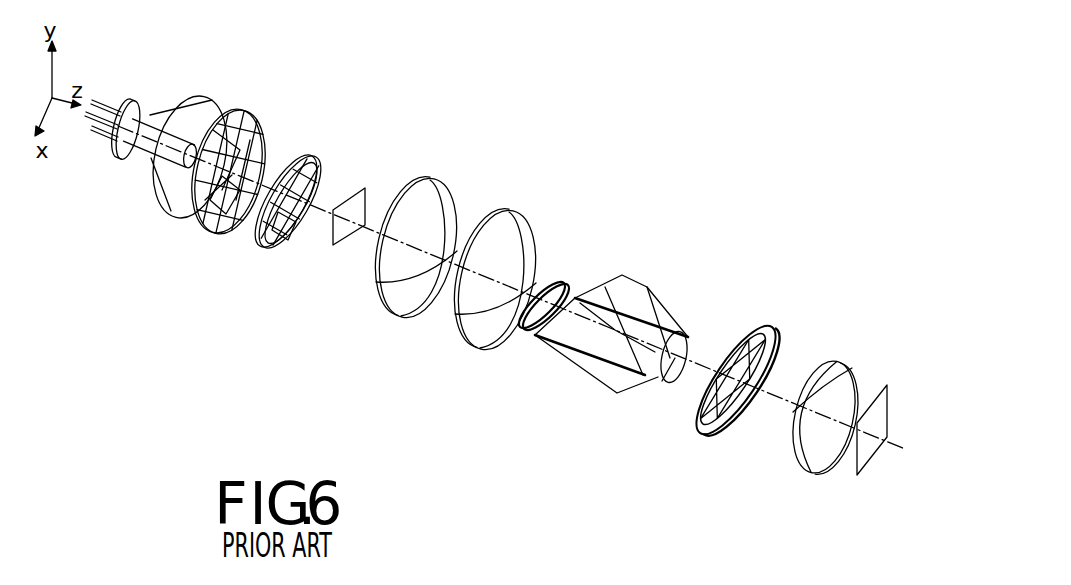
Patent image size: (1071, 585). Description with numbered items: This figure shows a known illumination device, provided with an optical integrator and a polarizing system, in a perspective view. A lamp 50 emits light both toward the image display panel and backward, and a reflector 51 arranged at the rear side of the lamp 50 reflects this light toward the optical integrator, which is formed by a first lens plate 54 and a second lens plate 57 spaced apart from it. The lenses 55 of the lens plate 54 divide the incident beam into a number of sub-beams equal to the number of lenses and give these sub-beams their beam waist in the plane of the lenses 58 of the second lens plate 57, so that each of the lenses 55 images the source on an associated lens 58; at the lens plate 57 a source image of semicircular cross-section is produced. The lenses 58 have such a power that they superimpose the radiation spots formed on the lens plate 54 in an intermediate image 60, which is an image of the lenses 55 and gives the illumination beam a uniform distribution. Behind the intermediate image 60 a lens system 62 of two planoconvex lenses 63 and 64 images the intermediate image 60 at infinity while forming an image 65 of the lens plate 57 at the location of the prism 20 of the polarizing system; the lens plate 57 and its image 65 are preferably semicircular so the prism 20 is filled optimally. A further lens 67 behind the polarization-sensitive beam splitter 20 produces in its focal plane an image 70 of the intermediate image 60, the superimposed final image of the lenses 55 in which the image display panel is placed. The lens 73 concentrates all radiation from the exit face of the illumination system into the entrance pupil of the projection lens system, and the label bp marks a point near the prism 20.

The lamp 50 is at (167, 202).
The reflector 51 is at (183, 110).
The first lens plate 54 is at (265, 135).
The lenses of the first lens plate 55 is at (233, 202).
The second lens plate 57 is at (305, 162).
The lenses of the second lens plate 58 is at (292, 240).
The intermediate image 60 is at (356, 189).
The lens system 62 is at (494, 141).
The planoconvex lens 63 is at (449, 184).
The planoconvex lens 64 is at (524, 210).
The image of the lens plate 65 is at (559, 287).
The prism 20 is at (629, 258).
The beam point bp is at (673, 374).
The further lens 67 is at (754, 330).
The lens 73 is at (792, 460).
The image of the intermediate image 70 is at (857, 463).